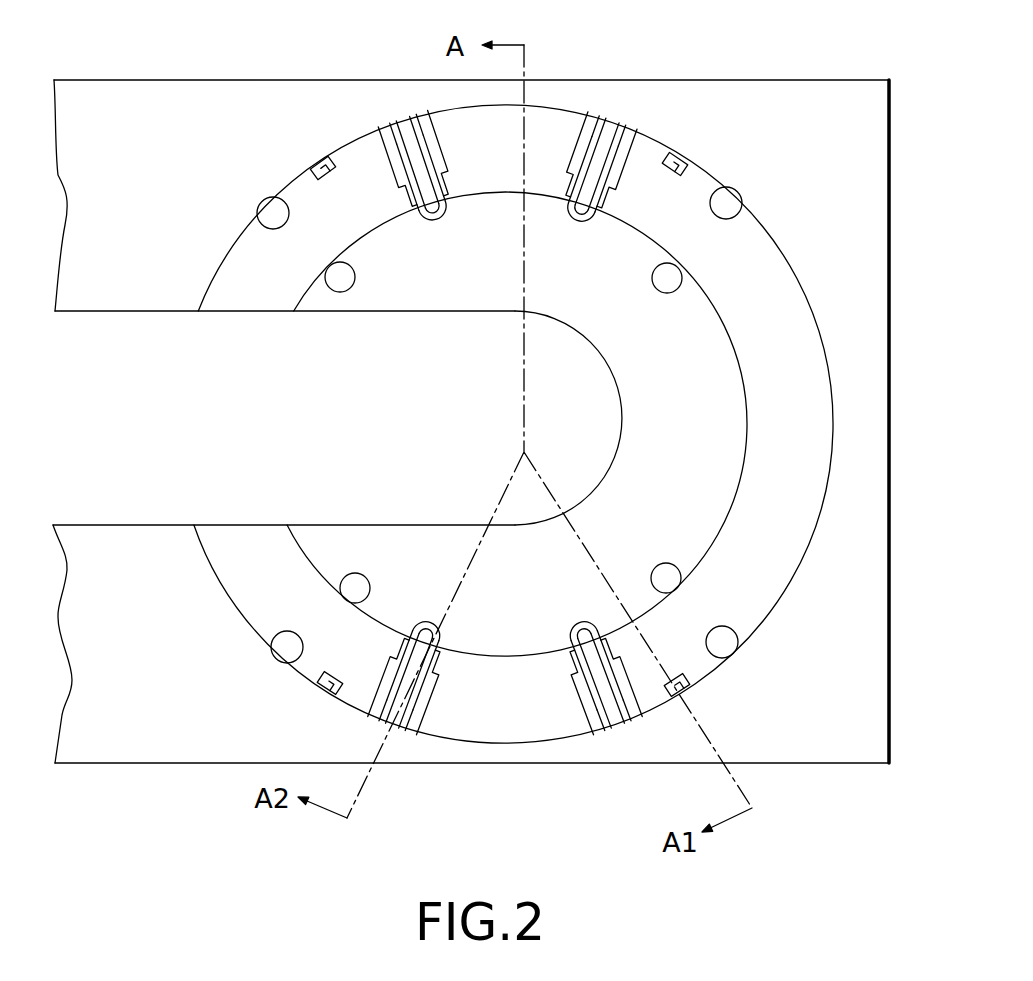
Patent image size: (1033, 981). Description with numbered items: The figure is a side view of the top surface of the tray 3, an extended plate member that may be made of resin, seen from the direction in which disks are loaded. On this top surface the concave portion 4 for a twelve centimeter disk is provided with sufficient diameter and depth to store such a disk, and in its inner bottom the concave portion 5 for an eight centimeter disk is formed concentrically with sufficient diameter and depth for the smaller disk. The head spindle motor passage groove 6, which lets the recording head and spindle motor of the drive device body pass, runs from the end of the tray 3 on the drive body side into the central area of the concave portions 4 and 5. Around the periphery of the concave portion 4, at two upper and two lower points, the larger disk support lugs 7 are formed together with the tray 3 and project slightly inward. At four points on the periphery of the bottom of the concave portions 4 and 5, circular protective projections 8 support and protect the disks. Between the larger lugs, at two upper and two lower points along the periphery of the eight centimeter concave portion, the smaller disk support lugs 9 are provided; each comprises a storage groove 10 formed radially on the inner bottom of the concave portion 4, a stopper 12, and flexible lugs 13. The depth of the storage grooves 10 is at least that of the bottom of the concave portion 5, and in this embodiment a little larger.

The tray 3 is at (844, 105).
The concave portion for a 12 cm disk 4 is at (790, 343).
The concave portion for an 8 cm disk 5 is at (710, 477).
The head spindle motor passage groove 6 is at (173, 311).
The larger disk support lug 7 is at (325, 165).
The circular protective projection 8 is at (268, 210).
The smaller disk support lug 9 is at (376, 124).
The storage groove 10 is at (405, 735).
The stopper 12 is at (442, 174).
The flexible lug 13 is at (438, 226).